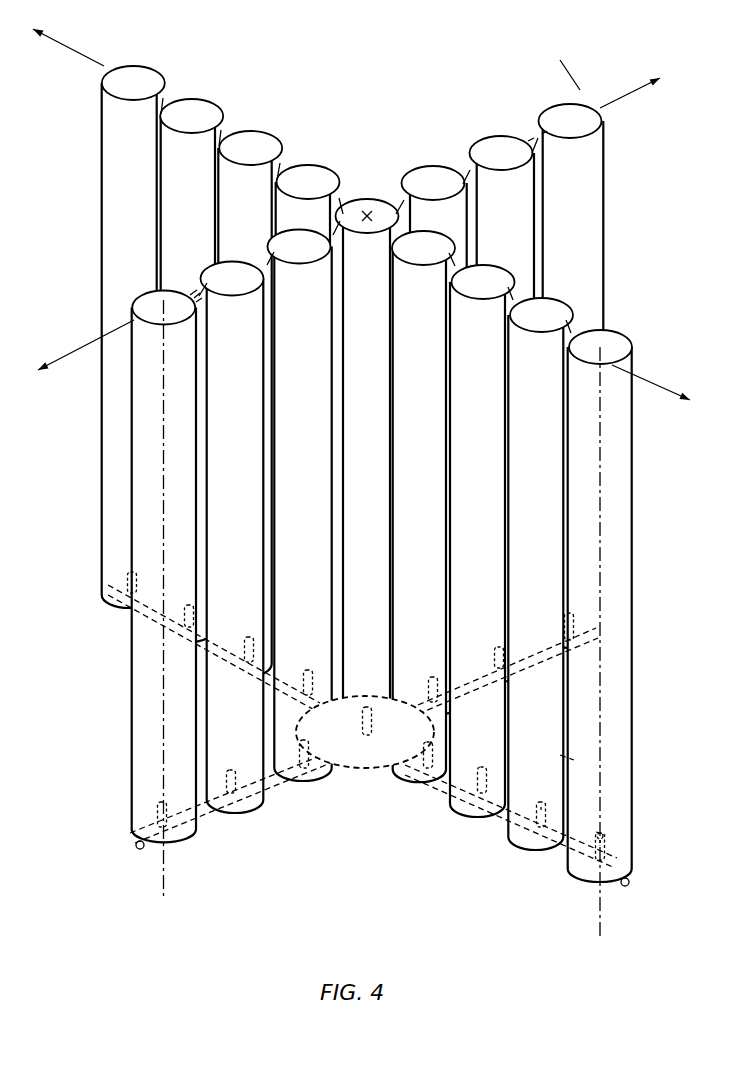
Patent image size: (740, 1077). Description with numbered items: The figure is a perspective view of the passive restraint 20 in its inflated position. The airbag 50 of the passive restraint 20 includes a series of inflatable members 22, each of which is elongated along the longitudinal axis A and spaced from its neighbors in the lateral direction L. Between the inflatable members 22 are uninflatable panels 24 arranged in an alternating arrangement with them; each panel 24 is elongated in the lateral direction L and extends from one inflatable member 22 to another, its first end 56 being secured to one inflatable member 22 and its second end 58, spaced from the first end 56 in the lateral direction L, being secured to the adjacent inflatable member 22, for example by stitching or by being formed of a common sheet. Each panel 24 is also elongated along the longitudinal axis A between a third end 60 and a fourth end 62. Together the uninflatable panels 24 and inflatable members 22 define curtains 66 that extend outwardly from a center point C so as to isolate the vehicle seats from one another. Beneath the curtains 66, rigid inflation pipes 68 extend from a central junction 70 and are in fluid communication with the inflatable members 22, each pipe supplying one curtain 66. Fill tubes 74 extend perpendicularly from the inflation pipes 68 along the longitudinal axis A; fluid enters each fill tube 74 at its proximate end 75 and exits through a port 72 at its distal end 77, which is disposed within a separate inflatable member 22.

The passive restraint 20 is at (543, 50).
The inflatable members 22 is at (356, 446).
The uninflatable panels 24 is at (532, 137).
The airbag 50 is at (356, 446).
The first end 56 is at (197, 297).
The second end 58 is at (195, 298).
The third end 60 is at (140, 707).
The fourth end 62 is at (192, 293).
The curtain 66 is at (125, 127).
The inflation pipes 68 is at (212, 813).
The central junction 70 is at (367, 780).
The ports 72 is at (600, 837).
The fill tubes 74 is at (553, 840).
The proximate end 75 is at (507, 840).
The distal end 77 is at (543, 807).
The lateral direction L is at (64, 41).
The center point C is at (366, 210).
The longitudinal axis A is at (162, 872).